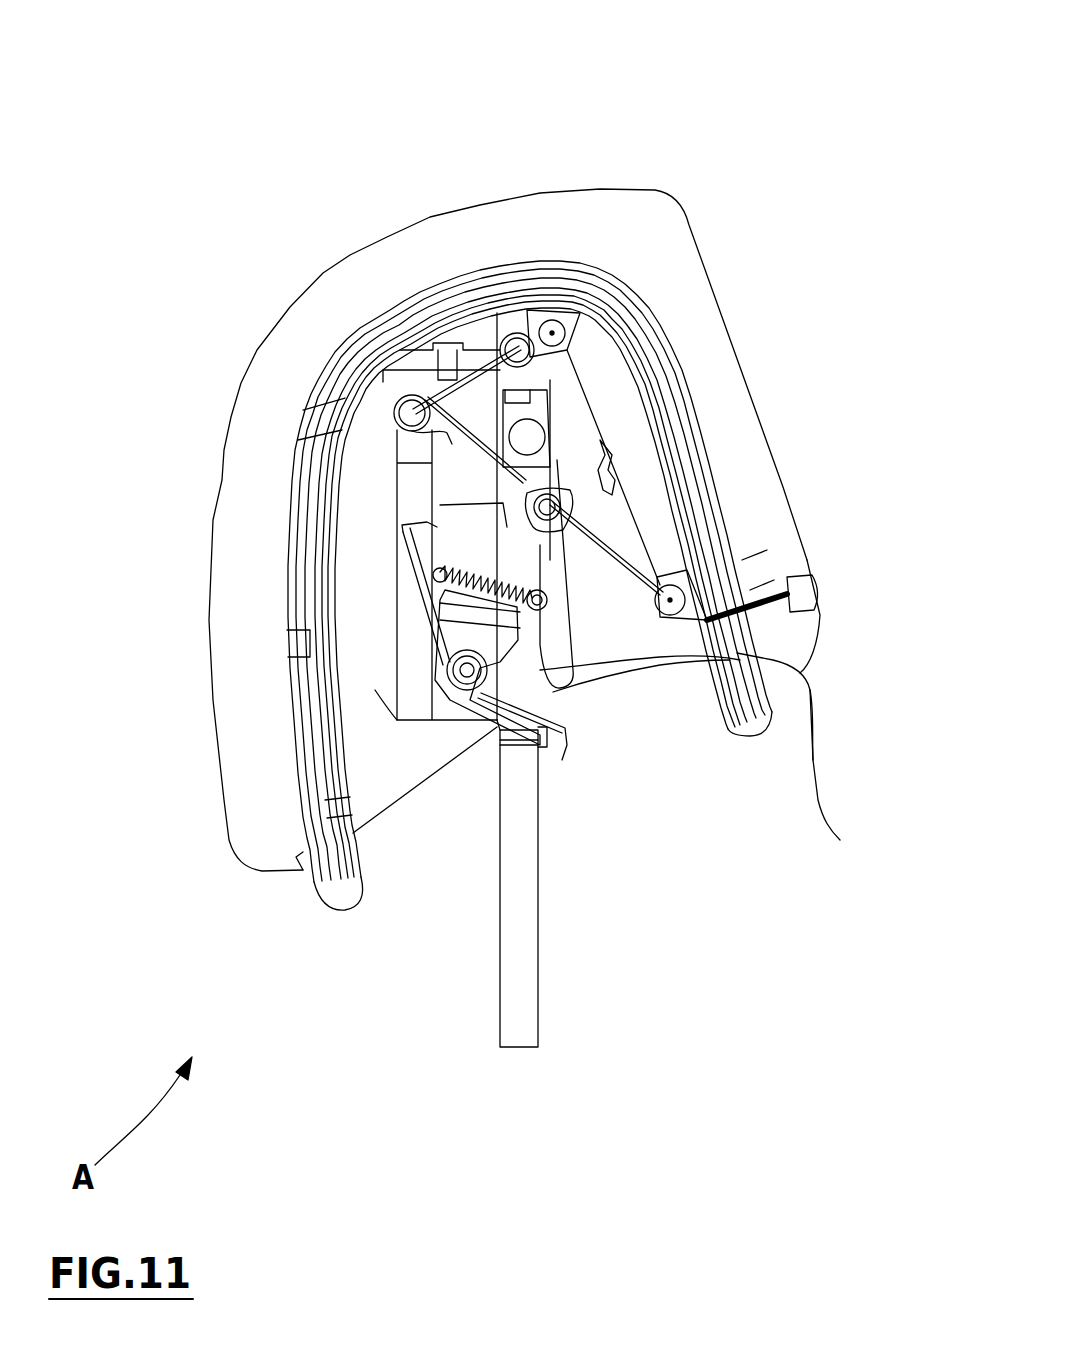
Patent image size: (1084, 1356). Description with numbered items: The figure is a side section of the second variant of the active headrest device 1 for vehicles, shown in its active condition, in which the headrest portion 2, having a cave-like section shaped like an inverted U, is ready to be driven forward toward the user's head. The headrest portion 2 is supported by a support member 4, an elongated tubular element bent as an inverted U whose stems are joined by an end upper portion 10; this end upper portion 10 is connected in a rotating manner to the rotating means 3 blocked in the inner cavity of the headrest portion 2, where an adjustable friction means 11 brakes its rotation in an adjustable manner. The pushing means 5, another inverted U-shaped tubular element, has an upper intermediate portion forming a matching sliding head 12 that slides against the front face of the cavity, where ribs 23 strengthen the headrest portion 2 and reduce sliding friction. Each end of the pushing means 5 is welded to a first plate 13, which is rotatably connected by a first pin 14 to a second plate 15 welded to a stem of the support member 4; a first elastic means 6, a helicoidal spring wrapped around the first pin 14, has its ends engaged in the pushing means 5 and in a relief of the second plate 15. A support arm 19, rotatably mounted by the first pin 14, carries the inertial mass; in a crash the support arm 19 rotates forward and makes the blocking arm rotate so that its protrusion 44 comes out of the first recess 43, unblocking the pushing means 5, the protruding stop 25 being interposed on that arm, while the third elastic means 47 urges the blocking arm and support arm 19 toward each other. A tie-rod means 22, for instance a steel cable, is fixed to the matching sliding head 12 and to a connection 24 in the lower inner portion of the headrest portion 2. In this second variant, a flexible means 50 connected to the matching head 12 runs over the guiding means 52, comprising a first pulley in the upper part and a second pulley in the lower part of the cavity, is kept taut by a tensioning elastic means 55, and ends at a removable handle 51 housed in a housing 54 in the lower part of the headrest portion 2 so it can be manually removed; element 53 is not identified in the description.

The active headrest device 1 is at (250, 109).
The headrest portion 2 is at (678, 190).
The rotating means 3 is at (633, 347).
The support member 4 is at (522, 1024).
The pushing means 5 is at (532, 508).
The first elastic means 6 is at (553, 693).
The end upper portion 10 is at (517, 343).
The adjustable friction means 11 is at (477, 345).
The matching sliding head 12 is at (412, 413).
The first plate 13 is at (453, 705).
The first pin 14 is at (420, 700).
The second plate 15 is at (567, 687).
The support arm 19 is at (440, 505).
The tie-rod means 22 is at (323, 462).
The ribs 23 is at (445, 690).
The connection 24 is at (840, 840).
The protruding stop 25 is at (437, 575).
The first recess 43 is at (375, 690).
The protrusion 44 is at (627, 673).
The third elastic means 47 is at (418, 535).
The flexible means 50 is at (582, 355).
The removable handle 51 is at (805, 590).
The guiding means 52 is at (553, 320).
The cable 53 is at (745, 608).
The housing 54 is at (815, 569).
The tensioning elastic means 55 is at (607, 432).